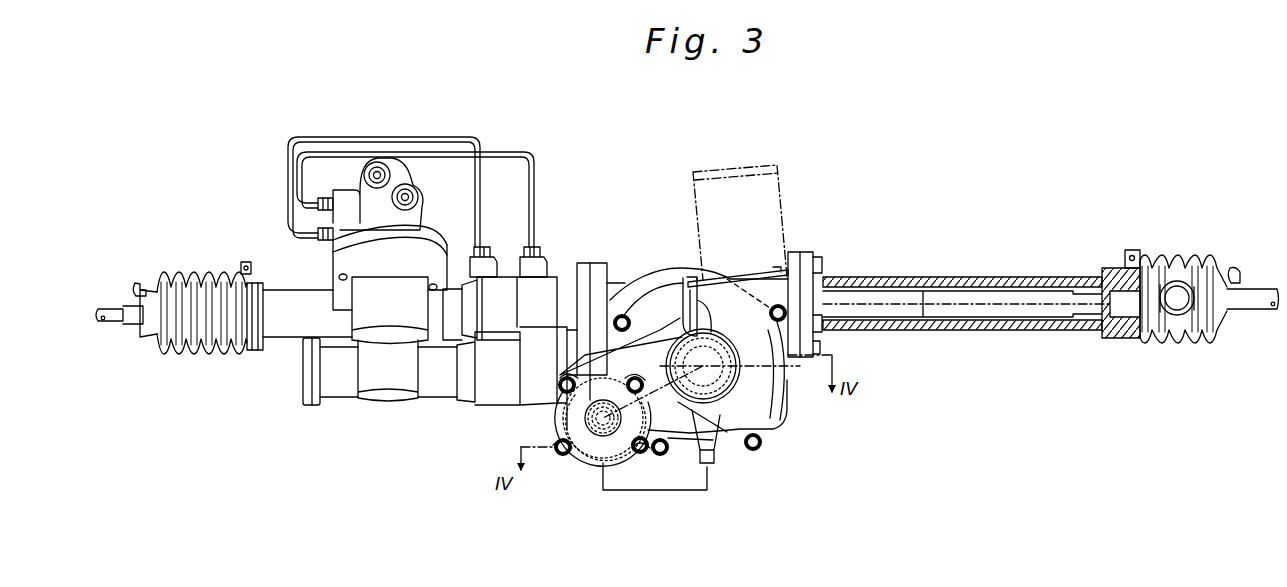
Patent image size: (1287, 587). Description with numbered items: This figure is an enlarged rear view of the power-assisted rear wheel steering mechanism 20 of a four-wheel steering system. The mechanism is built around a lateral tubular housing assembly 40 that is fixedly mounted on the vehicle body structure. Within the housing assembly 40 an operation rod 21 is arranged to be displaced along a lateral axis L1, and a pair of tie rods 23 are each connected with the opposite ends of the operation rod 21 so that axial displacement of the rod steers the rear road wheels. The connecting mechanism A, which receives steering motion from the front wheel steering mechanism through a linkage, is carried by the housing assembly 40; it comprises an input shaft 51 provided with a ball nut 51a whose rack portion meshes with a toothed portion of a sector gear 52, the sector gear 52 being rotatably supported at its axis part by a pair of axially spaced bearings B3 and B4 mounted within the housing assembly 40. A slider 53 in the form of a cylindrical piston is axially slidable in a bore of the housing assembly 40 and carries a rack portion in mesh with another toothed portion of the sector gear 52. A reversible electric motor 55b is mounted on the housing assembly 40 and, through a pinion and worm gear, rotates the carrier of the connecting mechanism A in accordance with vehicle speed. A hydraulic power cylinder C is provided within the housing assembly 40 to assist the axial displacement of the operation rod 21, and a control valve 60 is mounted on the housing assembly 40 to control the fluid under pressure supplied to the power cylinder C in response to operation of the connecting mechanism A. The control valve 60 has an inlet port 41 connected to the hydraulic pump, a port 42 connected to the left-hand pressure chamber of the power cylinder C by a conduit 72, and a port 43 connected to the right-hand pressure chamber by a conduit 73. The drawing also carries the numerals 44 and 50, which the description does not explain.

The power-assisted rear wheel steering mechanism 20 is at (906, 271).
The operation rod 21 is at (975, 292).
The tie rods 23 is at (121, 325).
The lateral tubular housing assembly 40 is at (582, 268).
The inlet port 41 is at (420, 197).
The port 42 is at (327, 197).
The port 43 is at (333, 226).
The hydraulic port 44 is at (393, 175).
The cover plate 50 is at (622, 450).
The input shaft 51 is at (557, 416).
The ball nut 51a is at (590, 462).
The sector gear 52 is at (687, 450).
The slider 53 is at (732, 392).
The reversible electric motor 55b is at (787, 200).
The control valve 60 is at (348, 258).
The conduit 72 is at (372, 137).
The conduit 73 is at (517, 152).
The connecting mechanism A is at (639, 251).
The bearing B3 is at (600, 360).
The bearing B4 is at (717, 440).
The hydraulic power cylinder C is at (538, 291).
The lateral axis L1 is at (1038, 312).